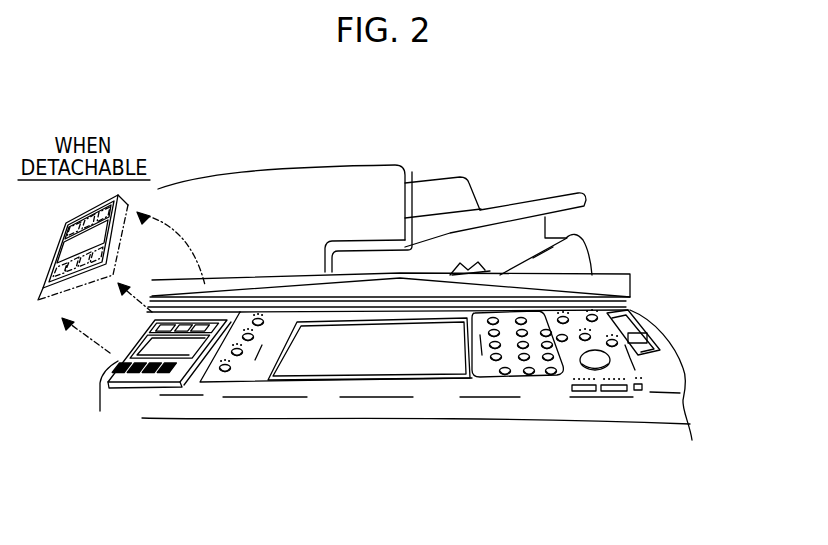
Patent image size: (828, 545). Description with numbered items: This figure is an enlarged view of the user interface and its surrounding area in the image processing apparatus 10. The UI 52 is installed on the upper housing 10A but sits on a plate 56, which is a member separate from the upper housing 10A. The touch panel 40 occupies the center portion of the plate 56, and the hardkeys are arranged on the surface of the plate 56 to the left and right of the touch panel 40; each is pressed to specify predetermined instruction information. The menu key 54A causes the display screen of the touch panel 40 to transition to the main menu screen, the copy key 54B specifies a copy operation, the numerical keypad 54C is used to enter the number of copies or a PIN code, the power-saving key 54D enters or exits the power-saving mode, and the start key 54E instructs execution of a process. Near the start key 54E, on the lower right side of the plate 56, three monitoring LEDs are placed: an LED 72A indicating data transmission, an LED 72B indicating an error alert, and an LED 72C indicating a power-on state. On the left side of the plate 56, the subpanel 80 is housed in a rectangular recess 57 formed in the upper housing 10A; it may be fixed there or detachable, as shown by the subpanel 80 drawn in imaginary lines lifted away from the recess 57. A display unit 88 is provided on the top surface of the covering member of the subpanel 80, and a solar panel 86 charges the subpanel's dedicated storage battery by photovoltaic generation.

The image processing apparatus 10 is at (235, 149).
The upper housing 10A is at (172, 410).
The touch panel 40 is at (327, 367).
The UI 52 is at (374, 384).
The menu key 54A is at (258, 317).
The copy key 54B is at (254, 336).
The numerical keypad 54C is at (520, 376).
The power-saving key 54D is at (603, 316).
The start key 54E is at (603, 363).
The plate 56 is at (240, 373).
The recess 57 is at (104, 399).
The LED for indicating data transmission 72A is at (587, 392).
The LED for indicating an error alert 72B is at (621, 393).
The LED for indicating a power-on state 72C is at (645, 388).
The subpanel 80 is at (118, 354).
The solar panel 86 is at (186, 324).
The display unit 88 is at (152, 348).